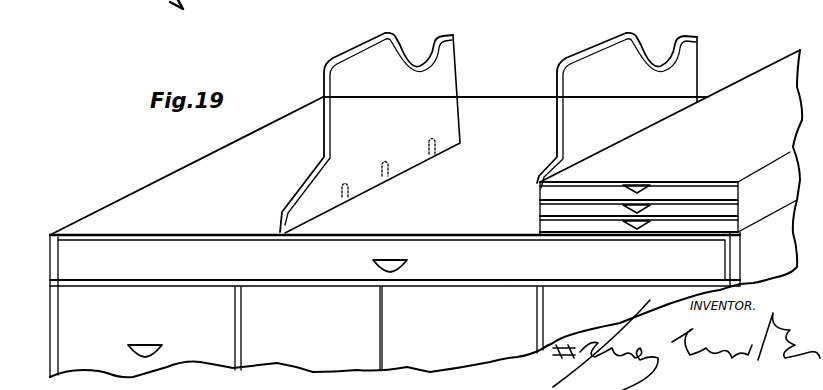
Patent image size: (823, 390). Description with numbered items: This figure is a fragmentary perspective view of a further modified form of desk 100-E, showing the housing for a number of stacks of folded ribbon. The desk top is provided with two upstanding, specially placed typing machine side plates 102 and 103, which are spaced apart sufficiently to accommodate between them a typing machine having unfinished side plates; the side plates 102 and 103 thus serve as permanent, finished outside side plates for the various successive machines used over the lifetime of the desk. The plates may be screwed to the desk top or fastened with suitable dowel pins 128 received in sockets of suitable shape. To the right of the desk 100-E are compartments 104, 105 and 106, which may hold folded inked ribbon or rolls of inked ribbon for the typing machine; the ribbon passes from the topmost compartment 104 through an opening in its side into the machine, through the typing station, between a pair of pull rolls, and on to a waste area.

The desk 100-E is at (200, 159).
The typing machine side plate 102 is at (460, 67).
The typing machine side plate 103 is at (700, 53).
The compartment 104 is at (738, 182).
The compartment 105 is at (738, 202).
The compartment 106 is at (733, 220).
The dowel pins 128 is at (433, 155).